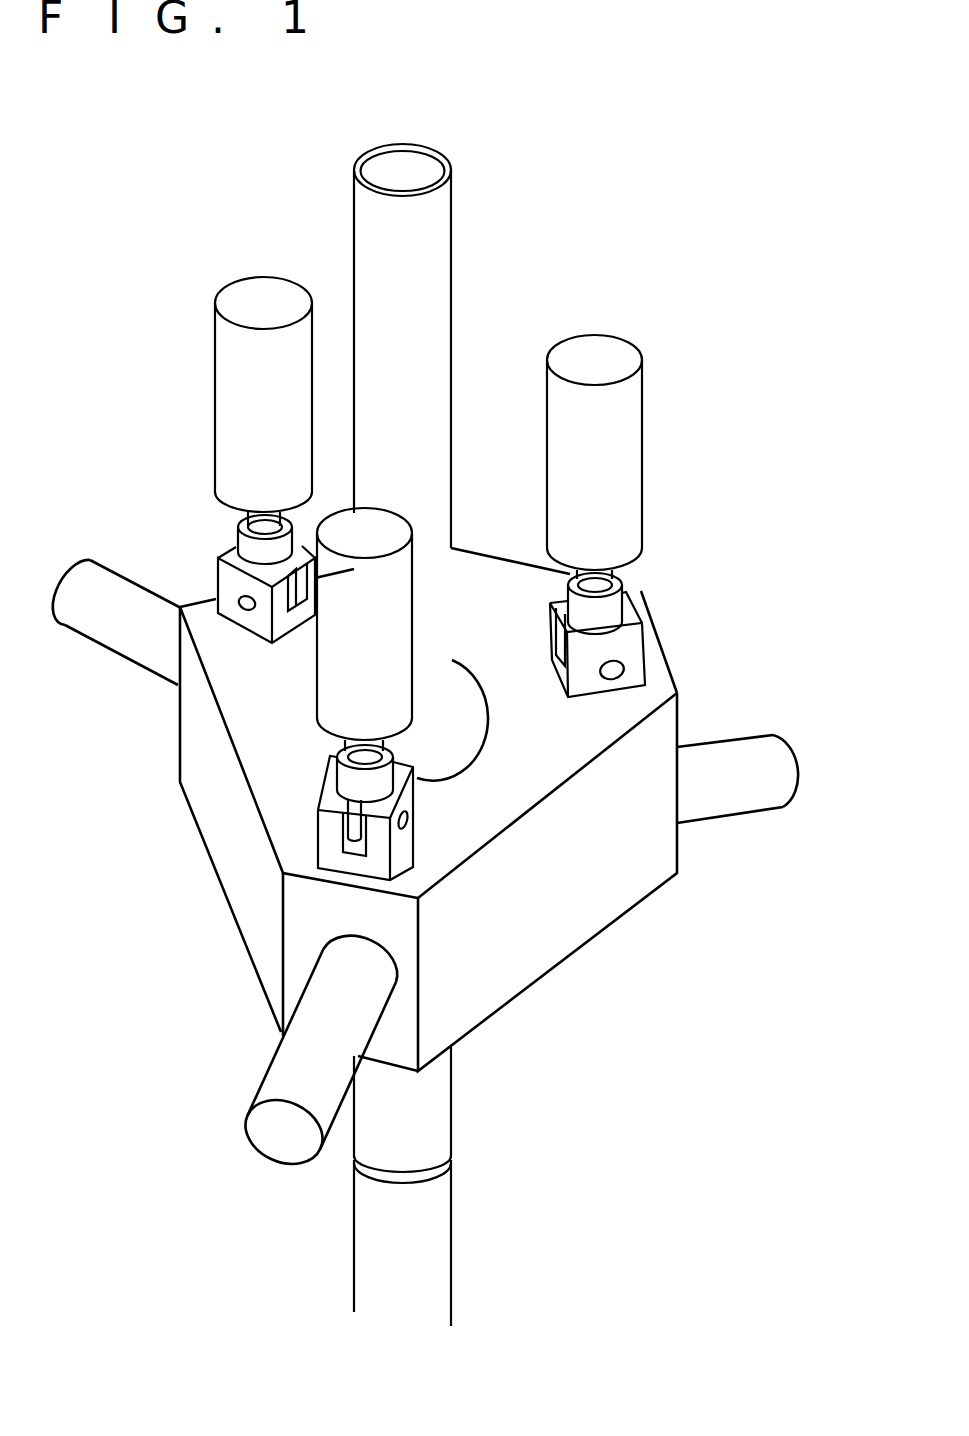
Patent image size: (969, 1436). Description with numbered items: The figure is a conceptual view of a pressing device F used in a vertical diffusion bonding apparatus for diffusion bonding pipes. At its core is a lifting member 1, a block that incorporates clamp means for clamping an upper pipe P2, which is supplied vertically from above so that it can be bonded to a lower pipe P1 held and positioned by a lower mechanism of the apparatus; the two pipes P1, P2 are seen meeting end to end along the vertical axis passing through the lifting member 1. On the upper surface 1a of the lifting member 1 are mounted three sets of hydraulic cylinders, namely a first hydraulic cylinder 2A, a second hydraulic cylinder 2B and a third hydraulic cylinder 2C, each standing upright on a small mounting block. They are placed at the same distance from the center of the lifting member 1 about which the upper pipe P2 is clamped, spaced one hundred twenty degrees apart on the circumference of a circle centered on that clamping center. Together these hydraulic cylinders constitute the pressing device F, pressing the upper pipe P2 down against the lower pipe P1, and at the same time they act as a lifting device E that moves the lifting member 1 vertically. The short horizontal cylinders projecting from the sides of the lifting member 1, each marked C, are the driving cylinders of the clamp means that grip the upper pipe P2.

The lifting member 1 is at (657, 605).
The upper surface of lifting member 1a is at (663, 683).
The first hydraulic cylinder 2A is at (316, 688).
The second hydraulic cylinder 2B is at (644, 459).
The third hydraulic cylinder 2C is at (214, 399).
The driving cylinder of the clamp means C is at (102, 648).
The pressing device F is at (698, 327).
The lifting device E is at (413, 735).
The lower pipe P1 is at (454, 1238).
The upper pipe P2 is at (454, 1098).